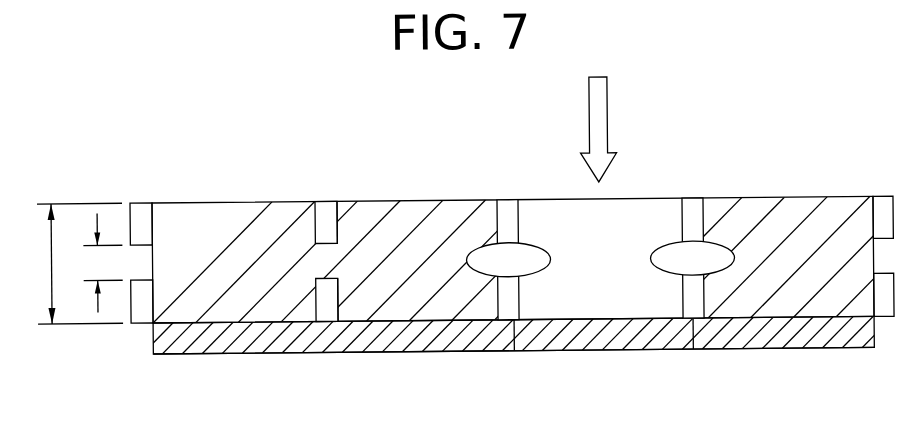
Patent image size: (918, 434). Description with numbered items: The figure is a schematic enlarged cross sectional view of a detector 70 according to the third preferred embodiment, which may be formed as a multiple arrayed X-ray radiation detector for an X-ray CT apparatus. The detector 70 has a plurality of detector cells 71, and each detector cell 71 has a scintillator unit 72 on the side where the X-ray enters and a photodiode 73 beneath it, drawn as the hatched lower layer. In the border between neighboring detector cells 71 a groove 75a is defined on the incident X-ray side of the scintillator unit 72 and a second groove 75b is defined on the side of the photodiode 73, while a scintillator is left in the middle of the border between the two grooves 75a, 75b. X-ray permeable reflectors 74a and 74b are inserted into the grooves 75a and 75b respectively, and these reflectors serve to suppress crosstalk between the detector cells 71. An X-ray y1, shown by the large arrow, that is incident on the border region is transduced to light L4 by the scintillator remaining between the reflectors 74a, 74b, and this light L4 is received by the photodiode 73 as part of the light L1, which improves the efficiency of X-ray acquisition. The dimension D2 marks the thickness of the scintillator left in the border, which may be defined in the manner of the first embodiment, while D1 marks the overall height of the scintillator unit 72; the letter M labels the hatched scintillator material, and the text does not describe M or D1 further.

The detector 70 is at (745, 126).
The detector cell 71 is at (552, 365).
The scintillator unit 72 is at (452, 223).
The photodiode 73 is at (447, 306).
The X-ray permeable reflector 74a is at (326, 214).
The X-ray permeable reflector 74b is at (327, 310).
The groove 75a is at (342, 222).
The groove 75b is at (337, 299).
The molding material M is at (793, 221).
The light L1 is at (612, 286).
The light L4 is at (717, 267).
The X-ray y1 is at (598, 117).
The overall thickness D1 is at (80, 263).
The thickness of the scintillator in the border D2 is at (103, 262).